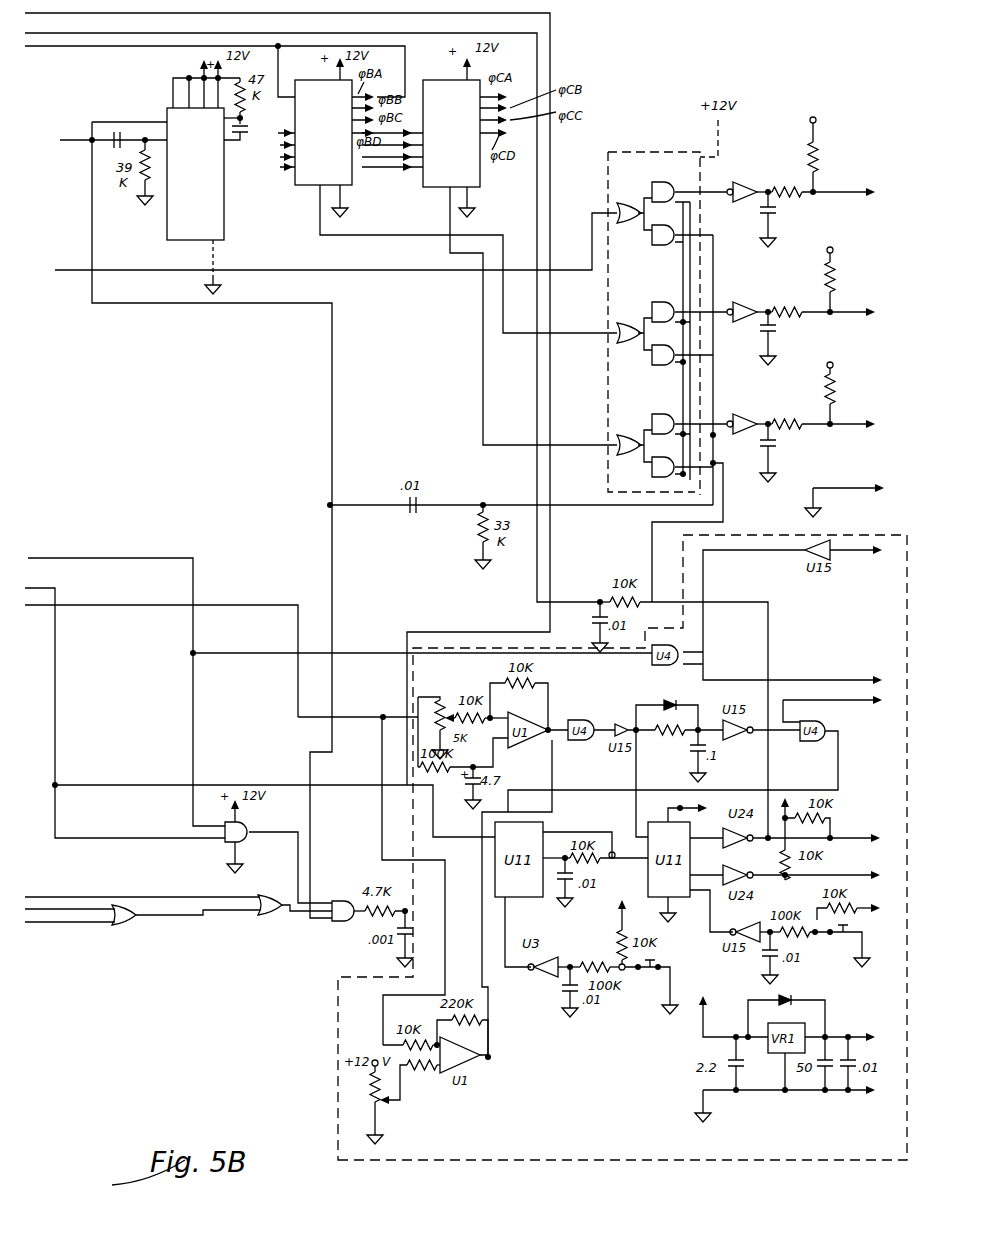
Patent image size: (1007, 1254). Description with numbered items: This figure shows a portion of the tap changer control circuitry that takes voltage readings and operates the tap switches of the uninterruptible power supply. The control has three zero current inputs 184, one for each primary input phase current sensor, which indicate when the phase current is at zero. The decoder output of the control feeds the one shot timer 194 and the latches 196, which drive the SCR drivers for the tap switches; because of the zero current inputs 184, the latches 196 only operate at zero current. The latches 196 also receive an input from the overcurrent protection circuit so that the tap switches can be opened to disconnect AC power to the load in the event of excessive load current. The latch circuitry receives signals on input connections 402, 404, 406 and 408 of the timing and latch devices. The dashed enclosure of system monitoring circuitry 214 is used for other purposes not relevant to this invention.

The one shot timer 194 is at (205, 226).
The latches 196 is at (292, 190).
The input pin 402 is at (282, 125).
The input pin 404 is at (278, 147).
The input pin 406 is at (278, 159).
The input pin 408 is at (285, 173).
The zero current inputs 184 is at (848, 195).
The system monitoring circuitry 214 is at (632, 1125).